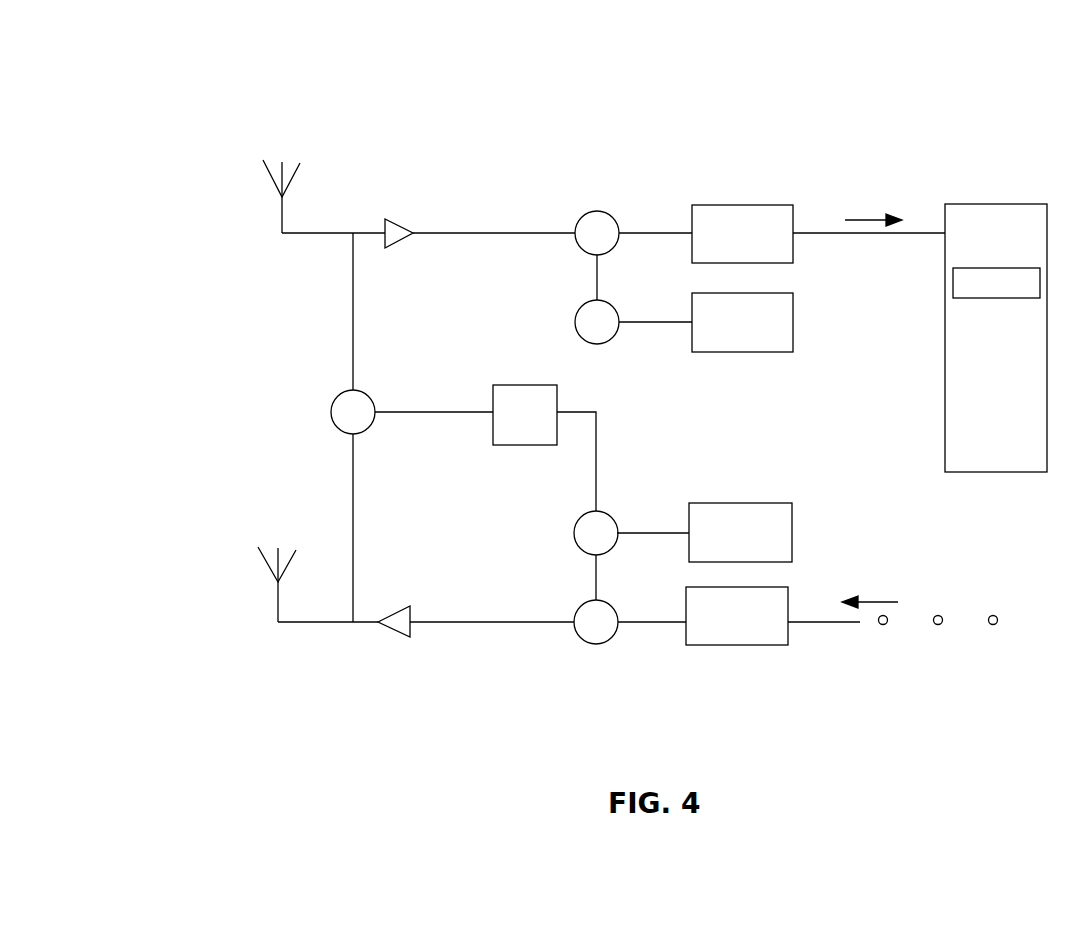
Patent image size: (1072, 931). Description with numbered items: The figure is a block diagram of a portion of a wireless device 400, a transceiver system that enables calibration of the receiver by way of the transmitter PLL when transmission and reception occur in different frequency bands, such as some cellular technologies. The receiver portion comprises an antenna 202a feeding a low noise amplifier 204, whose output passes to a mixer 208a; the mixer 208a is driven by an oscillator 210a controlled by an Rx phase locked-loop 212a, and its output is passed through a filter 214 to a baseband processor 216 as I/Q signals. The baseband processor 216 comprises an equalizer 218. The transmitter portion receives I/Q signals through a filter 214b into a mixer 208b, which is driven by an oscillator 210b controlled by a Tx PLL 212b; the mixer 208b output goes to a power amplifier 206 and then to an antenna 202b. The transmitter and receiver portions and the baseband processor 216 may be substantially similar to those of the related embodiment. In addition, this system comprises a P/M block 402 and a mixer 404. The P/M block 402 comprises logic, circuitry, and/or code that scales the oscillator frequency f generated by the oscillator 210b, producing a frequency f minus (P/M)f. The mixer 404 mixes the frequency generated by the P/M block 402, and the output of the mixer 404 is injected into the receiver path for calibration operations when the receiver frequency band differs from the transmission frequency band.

The portion of a wireless device 400 is at (100, 66).
The antenna 202a is at (288, 167).
The antenna 202b is at (283, 553).
The low noise amplifier (LNA) 204 is at (407, 223).
The power amplifier (PA) 206 is at (408, 606).
The mixer 208a is at (598, 211).
The mixer 208b is at (606, 603).
The oscillator 210a is at (609, 305).
The oscillator 210b is at (606, 514).
The Rx phase locked-loop (PLL) 212a is at (794, 304).
The Tx PLL 212b is at (740, 503).
The filter 214 is at (740, 205).
The filter 214b is at (738, 646).
The baseband processor 216 is at (998, 204).
The equalizer 218 is at (998, 268).
The P/M block 402 is at (526, 385).
The mixer 404 is at (367, 395).